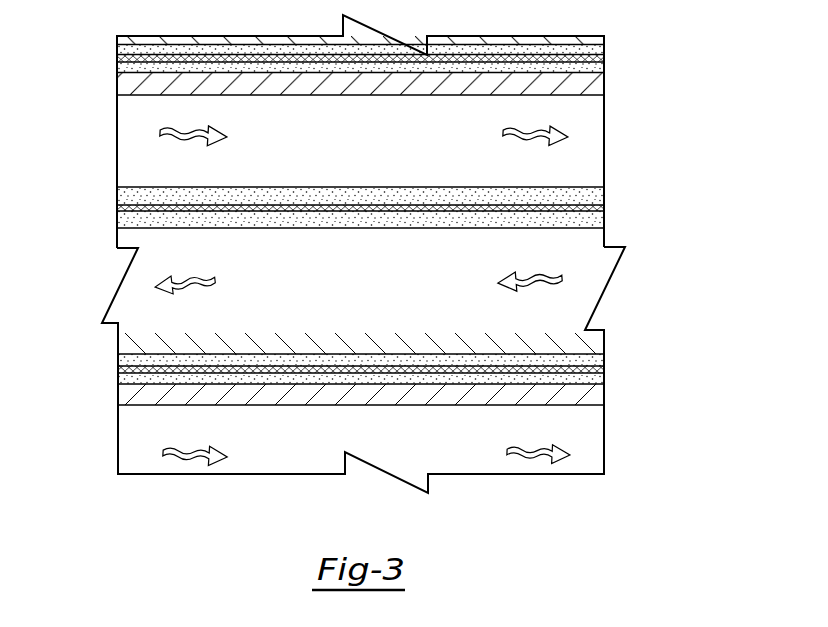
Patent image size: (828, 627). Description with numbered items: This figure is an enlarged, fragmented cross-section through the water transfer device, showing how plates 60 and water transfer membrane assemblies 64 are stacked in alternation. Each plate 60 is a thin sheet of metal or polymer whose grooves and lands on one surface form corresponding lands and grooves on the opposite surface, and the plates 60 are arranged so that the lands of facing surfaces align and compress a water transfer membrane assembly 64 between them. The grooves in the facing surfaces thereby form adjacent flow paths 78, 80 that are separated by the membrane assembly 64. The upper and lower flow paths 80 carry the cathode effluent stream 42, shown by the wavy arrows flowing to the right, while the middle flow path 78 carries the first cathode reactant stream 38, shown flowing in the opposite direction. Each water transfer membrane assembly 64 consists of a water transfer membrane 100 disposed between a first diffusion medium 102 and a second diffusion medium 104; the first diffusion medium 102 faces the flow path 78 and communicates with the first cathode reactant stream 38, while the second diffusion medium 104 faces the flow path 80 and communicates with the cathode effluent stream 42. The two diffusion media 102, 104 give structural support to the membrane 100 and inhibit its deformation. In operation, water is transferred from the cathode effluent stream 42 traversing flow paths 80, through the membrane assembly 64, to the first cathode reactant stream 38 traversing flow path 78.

The first cathode reactant stream 38 is at (203, 273).
The cathode effluent stream 42 is at (184, 130).
The plate 60 is at (604, 85).
The water transfer membrane assembly 64 is at (357, 210).
The flow path 78 is at (307, 291).
The flow path 80 is at (307, 156).
The water transfer membrane 100 is at (604, 208).
The first diffusion medium 102 is at (604, 218).
The second diffusion medium 104 is at (604, 191).